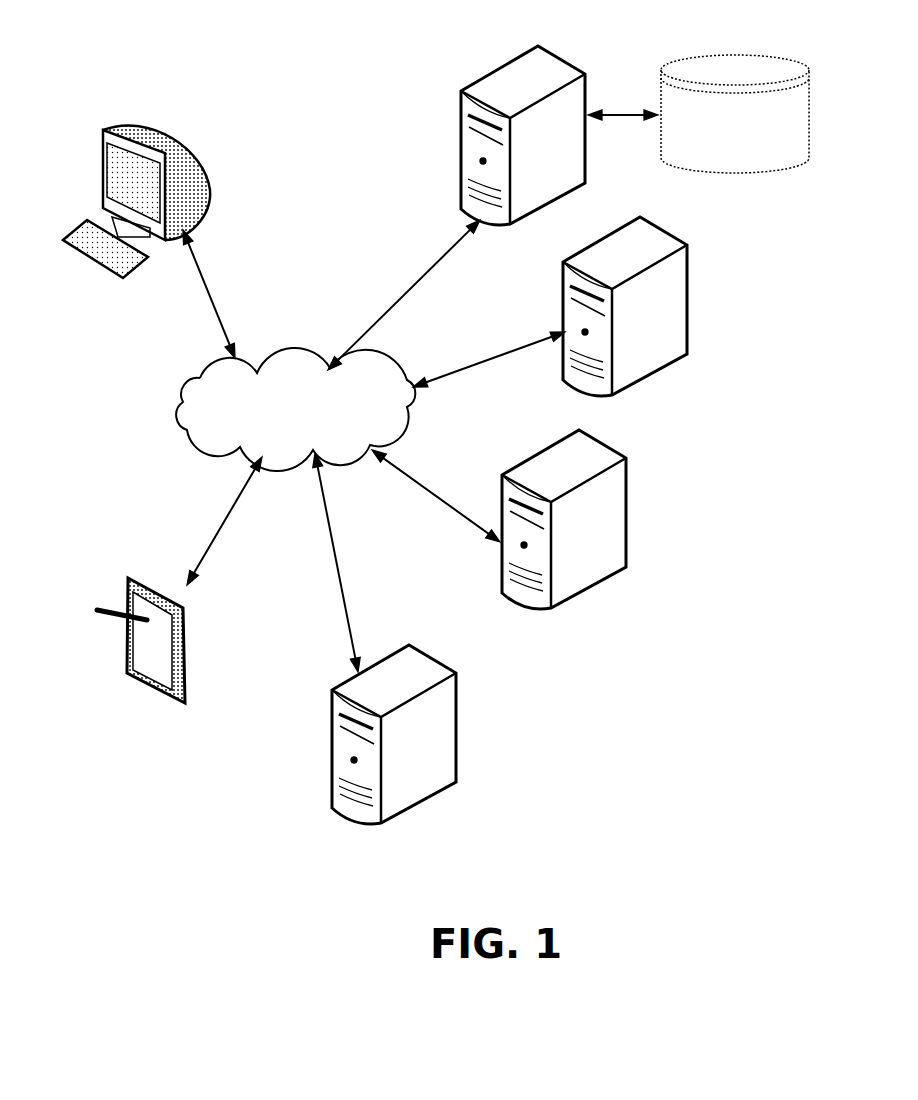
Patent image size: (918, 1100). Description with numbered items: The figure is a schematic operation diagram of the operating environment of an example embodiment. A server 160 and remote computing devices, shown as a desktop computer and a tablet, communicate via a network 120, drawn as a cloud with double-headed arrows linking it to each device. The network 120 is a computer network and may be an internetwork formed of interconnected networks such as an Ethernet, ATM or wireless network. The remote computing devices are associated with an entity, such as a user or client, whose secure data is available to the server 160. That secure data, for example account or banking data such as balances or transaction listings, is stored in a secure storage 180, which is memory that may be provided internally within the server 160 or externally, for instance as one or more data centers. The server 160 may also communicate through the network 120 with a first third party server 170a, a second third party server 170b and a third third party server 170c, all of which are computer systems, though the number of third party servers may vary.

The network 120 is at (273, 432).
The server 160 is at (552, 68).
The first third party server 170a is at (655, 237).
The second third party server 170b is at (593, 450).
The third third party server 170c is at (423, 665).
The secure storage 180 is at (752, 47).